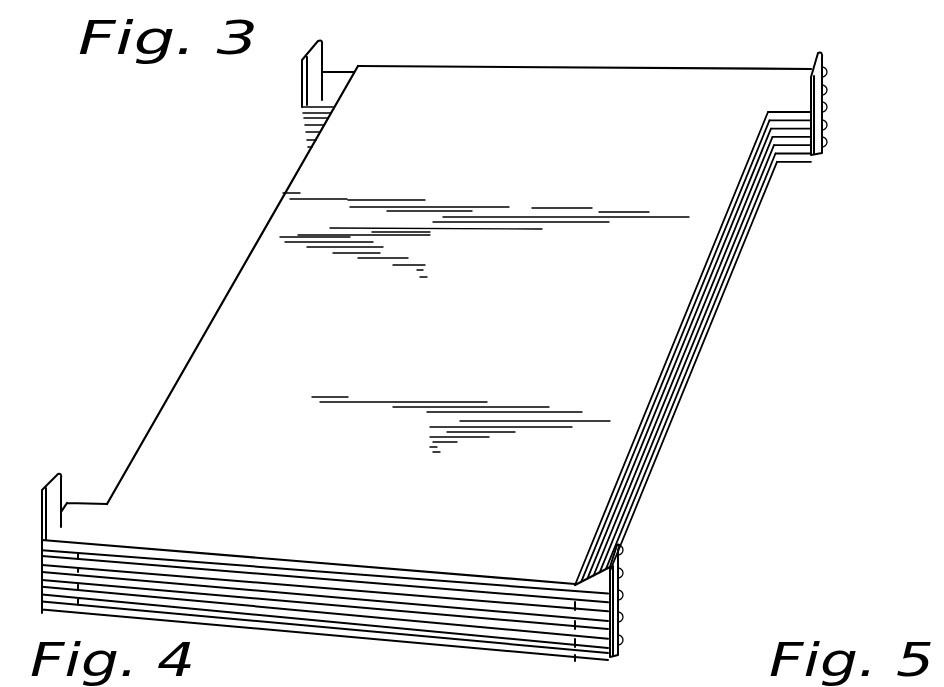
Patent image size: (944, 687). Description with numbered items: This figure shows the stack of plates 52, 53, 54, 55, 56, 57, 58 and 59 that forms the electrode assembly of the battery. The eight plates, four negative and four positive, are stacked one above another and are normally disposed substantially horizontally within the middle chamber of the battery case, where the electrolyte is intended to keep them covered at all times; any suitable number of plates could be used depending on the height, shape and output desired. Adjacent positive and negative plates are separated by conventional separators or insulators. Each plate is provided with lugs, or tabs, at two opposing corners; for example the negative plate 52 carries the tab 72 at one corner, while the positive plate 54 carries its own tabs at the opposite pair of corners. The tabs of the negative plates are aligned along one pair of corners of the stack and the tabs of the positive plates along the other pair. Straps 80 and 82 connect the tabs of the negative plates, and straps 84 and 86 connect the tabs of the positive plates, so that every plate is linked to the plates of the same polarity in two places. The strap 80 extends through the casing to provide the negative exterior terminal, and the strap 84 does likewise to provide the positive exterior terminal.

The negative plate 52 is at (392, 637).
The plate 53 is at (72, 601).
The positive plate 54 is at (450, 624).
The plate 55 is at (157, 592).
The plate 56 is at (500, 611).
The plate 57 is at (237, 577).
The plate 58 is at (552, 587).
The plate 59 is at (337, 574).
The tab 72 is at (632, 617).
The strap 80 is at (630, 579).
The strap 82 is at (300, 79).
The strap 84 is at (63, 472).
The strap 86 is at (826, 117).